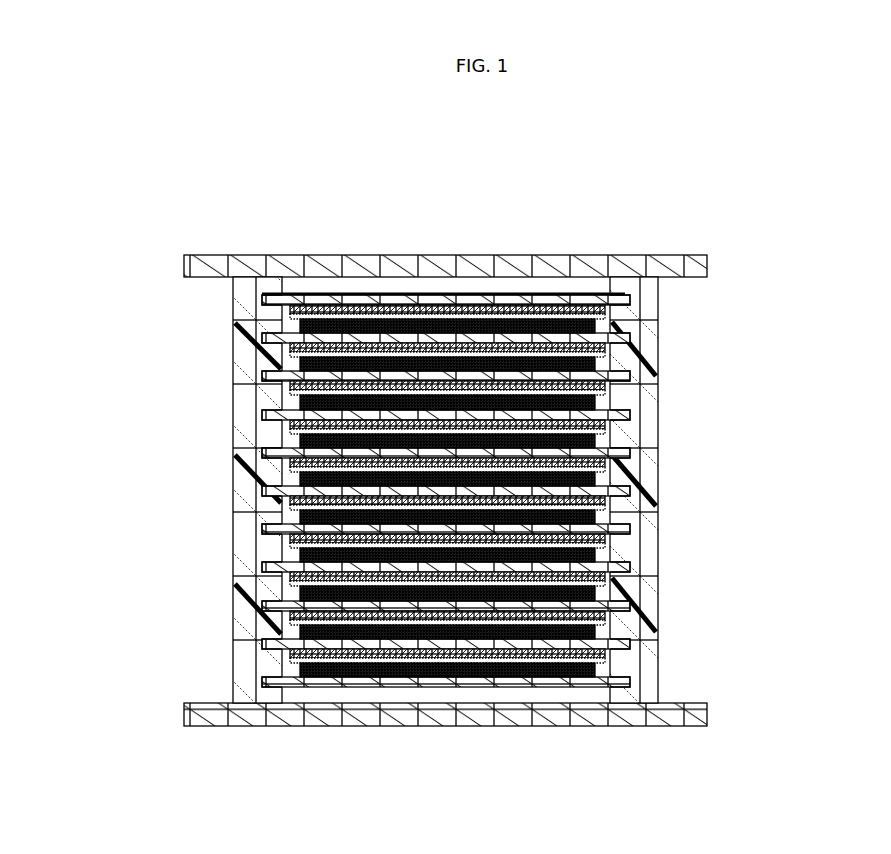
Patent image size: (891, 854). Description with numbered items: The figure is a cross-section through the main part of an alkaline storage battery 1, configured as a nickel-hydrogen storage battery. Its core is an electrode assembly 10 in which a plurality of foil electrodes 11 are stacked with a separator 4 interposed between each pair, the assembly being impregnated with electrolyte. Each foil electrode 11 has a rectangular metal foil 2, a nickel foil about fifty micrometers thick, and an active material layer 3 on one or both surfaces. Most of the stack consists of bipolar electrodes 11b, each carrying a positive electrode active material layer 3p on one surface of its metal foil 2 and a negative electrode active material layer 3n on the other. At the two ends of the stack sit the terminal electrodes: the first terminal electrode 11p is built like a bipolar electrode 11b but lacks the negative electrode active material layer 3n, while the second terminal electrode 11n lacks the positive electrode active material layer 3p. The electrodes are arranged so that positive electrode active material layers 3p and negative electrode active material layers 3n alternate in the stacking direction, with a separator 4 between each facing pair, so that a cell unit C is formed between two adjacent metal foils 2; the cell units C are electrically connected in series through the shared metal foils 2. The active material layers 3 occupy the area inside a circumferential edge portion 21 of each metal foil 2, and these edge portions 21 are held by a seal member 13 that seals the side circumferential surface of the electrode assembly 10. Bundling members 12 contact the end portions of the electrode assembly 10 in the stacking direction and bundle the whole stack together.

The alkaline storage battery 1 is at (578, 222).
The metal foil 2 is at (412, 306).
The active material layer 3 is at (456, 492).
The negative electrode active material layer 3n is at (478, 322).
The positive electrode active material layer 3p is at (340, 488).
The separator 4 is at (515, 296).
The electrode assembly 10 is at (607, 395).
The foil electrode 11 is at (502, 490).
The second terminal electrode 11n is at (424, 206).
The first terminal electrode 11p is at (375, 787).
The bipolar electrode 11b is at (612, 318).
The bundling member 12 is at (320, 268).
The seal member 13 is at (247, 362).
The circumferential edge portion 21 is at (268, 293).
The cell unit C is at (130, 417).